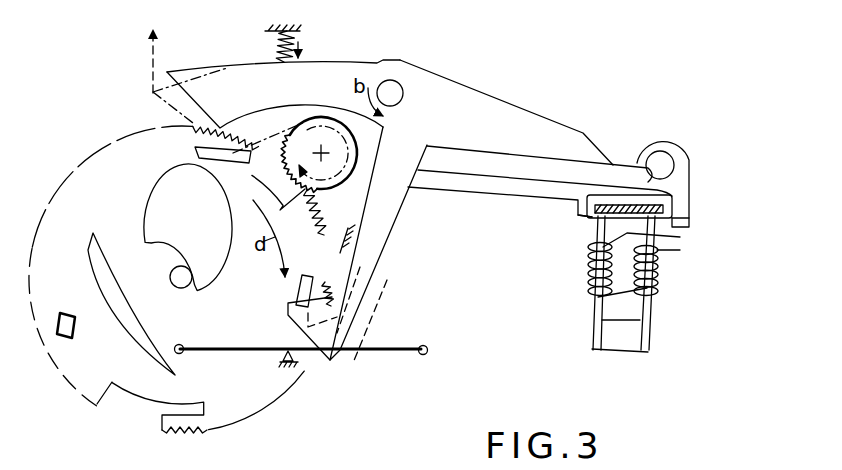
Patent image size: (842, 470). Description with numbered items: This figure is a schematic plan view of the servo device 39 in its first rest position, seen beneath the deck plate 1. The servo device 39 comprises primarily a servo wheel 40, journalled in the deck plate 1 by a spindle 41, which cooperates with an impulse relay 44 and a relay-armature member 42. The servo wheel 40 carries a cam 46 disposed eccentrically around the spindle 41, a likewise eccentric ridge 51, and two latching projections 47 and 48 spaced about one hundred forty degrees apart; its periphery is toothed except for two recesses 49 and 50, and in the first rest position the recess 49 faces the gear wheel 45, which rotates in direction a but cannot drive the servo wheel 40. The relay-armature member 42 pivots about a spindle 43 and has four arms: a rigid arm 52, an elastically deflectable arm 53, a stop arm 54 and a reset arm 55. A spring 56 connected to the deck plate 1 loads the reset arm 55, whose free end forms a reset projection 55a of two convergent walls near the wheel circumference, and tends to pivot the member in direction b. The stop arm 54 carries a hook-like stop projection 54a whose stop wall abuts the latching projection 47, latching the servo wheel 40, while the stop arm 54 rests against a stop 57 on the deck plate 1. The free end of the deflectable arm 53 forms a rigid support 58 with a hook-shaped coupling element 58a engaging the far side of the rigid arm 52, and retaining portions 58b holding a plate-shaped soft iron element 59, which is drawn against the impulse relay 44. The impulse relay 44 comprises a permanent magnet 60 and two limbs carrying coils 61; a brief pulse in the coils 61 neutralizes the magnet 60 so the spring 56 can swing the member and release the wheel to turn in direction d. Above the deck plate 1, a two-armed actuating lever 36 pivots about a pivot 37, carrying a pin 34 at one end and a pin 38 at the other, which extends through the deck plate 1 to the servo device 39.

The deck plate 1 is at (290, 28).
The pin 34 is at (423, 344).
The actuating lever 36 is at (397, 352).
The pivot 37 is at (297, 363).
The pin 38 is at (175, 342).
The servo device 39 is at (273, 406).
The servo wheel 40 is at (102, 360).
The spindle 41 is at (182, 266).
The relay-armature member 42 is at (412, 183).
The spindle 43 is at (398, 90).
The impulse relay 44 is at (631, 243).
The gear wheel 45 is at (331, 131).
The cam 46 is at (143, 177).
The latching projection 47 is at (308, 270).
The latching projection 48 is at (62, 327).
The recess 49 is at (265, 175).
The recess 50 is at (128, 402).
The ridge 51 is at (115, 302).
The rigid arm 52 is at (578, 147).
The elastically deflectable arm 53 is at (482, 188).
The stop arm 54 is at (388, 213).
The stop projection 54a is at (288, 313).
The reset arm 55 is at (287, 83).
The reset projection 55a is at (223, 117).
The spring 56 is at (268, 42).
The stop 57 is at (352, 233).
The rigid support 58 is at (635, 185).
The coupling element 58a is at (677, 145).
The retaining portions 58b is at (587, 217).
The soft iron element 59 is at (620, 204).
The permanent magnet 60 is at (620, 340).
The coils 61 is at (588, 268).